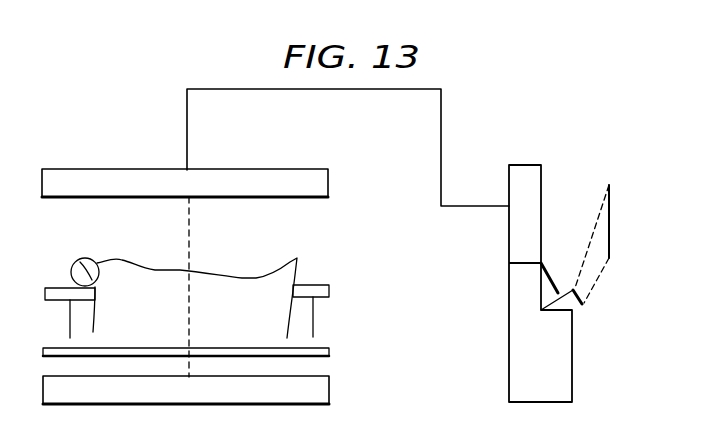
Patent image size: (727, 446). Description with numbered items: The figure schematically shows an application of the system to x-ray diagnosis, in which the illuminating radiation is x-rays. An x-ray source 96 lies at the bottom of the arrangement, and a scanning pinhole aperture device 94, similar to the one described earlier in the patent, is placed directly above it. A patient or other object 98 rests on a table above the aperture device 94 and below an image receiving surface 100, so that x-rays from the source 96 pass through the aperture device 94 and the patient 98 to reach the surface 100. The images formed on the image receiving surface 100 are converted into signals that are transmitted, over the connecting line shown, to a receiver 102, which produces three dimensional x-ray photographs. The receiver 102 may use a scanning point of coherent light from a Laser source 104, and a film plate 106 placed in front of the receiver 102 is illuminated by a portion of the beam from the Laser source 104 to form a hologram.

The scanning pinhole aperture device 94 is at (325, 346).
The x-ray source 96 is at (323, 390).
The patient or other object 98 is at (244, 277).
The image receiving surface 100 is at (288, 172).
The receiver 102 is at (534, 180).
The Laser source 104 is at (582, 304).
The film plate 106 is at (612, 231).